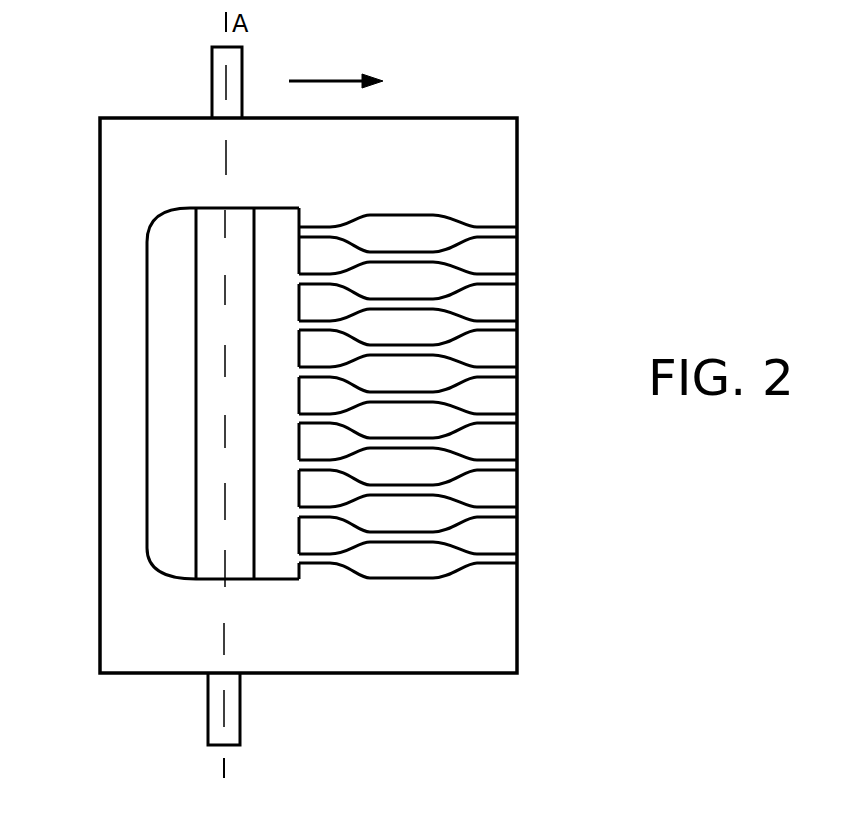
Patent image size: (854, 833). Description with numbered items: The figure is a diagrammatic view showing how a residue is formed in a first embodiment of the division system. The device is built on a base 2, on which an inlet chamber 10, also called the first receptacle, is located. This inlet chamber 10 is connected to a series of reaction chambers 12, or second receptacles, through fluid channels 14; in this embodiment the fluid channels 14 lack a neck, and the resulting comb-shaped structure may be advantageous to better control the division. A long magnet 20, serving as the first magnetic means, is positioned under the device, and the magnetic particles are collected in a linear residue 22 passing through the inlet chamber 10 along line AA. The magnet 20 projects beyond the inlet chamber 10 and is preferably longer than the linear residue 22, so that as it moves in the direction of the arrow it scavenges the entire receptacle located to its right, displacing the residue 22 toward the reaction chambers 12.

The base 2 is at (130, 636).
The inlet chamber 10 is at (162, 302).
The reaction chambers 12 is at (427, 226).
The fluid channels 14 is at (315, 232).
The magnet 20 is at (220, 82).
The residue 22 is at (215, 393).